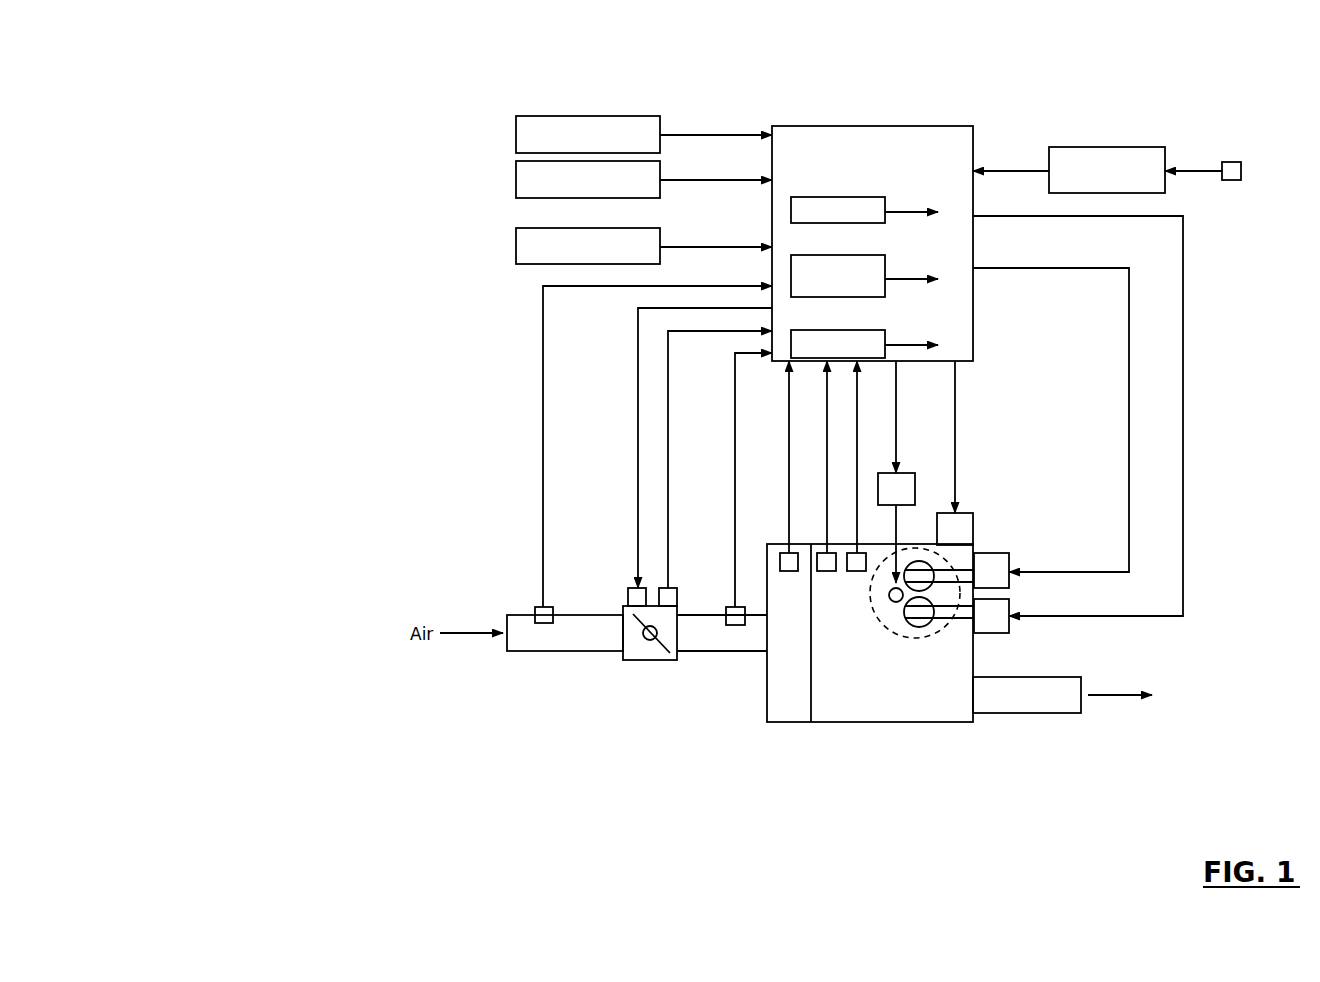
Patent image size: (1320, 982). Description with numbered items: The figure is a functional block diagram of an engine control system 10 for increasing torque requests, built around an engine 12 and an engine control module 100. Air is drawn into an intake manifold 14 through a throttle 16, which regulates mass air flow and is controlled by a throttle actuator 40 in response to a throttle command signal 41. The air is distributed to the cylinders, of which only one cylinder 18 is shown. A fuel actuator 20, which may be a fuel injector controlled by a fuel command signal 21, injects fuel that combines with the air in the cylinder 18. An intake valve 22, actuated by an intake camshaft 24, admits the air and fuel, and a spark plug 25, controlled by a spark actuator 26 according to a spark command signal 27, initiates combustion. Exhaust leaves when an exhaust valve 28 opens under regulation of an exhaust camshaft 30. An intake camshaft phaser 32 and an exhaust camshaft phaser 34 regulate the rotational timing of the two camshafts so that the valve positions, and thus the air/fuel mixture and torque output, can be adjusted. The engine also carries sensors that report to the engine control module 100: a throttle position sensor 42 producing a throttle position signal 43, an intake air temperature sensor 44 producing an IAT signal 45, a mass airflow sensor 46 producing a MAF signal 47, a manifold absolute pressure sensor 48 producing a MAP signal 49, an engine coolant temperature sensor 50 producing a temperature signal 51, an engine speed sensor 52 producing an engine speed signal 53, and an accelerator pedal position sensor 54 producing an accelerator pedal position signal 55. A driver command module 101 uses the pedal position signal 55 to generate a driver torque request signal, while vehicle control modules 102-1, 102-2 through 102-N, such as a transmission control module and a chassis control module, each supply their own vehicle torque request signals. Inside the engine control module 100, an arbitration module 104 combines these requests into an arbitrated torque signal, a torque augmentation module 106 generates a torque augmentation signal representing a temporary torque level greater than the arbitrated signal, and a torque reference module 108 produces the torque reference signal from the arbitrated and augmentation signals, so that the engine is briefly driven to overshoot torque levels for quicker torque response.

The engine control system 10 is at (338, 70).
The engine 12 is at (910, 723).
The intake manifold 14 is at (773, 723).
The throttle 16 is at (668, 661).
The cylinder 18 is at (870, 593).
The fuel actuator 20 is at (973, 533).
The fuel command signal 21 is at (955, 462).
The intake valve 22 is at (917, 627).
The intake camshaft 24 is at (965, 619).
The spark plug 25 is at (893, 602).
The spark actuator 26 is at (915, 473).
The spark command signal 27 is at (896, 437).
The exhaust valve 28 is at (906, 561).
The exhaust camshaft 30 is at (950, 620).
The intake camshaft phaser 32 is at (1005, 633).
The exhaust camshaft phaser 34 is at (1009, 552).
The throttle actuator 40 is at (628, 594).
The throttle command signal 41 is at (638, 435).
The throttle position sensor 42 is at (652, 588).
The throttle position signal 43 is at (668, 452).
The intake air temperature sensor 44 is at (537, 607).
The IAT signal 45 is at (543, 428).
The mass airflow sensor 46 is at (728, 607).
The MAF signal 47 is at (735, 465).
The manifold absolute pressure sensor 48 is at (779, 560).
The MAP signal 49 is at (789, 403).
The engine coolant temperature sensor 50 is at (817, 562).
The temperature signal 51 is at (827, 453).
The engine speed sensor 52 is at (849, 560).
The engine speed signal 53 is at (857, 457).
The accelerator pedal position sensor 54 is at (1240, 162).
The accelerator pedal position signal 55 is at (1196, 174).
The engine control module 100 is at (871, 126).
The driver command module 101 is at (1090, 147).
The vehicle control module 102-1 is at (516, 132).
The vehicle control module 102-2 is at (516, 177).
The vehicle control module 102-N is at (516, 244).
The arbitration module 104 is at (867, 197).
The torque augmentation module 106 is at (867, 255).
The torque reference module 108 is at (867, 330).